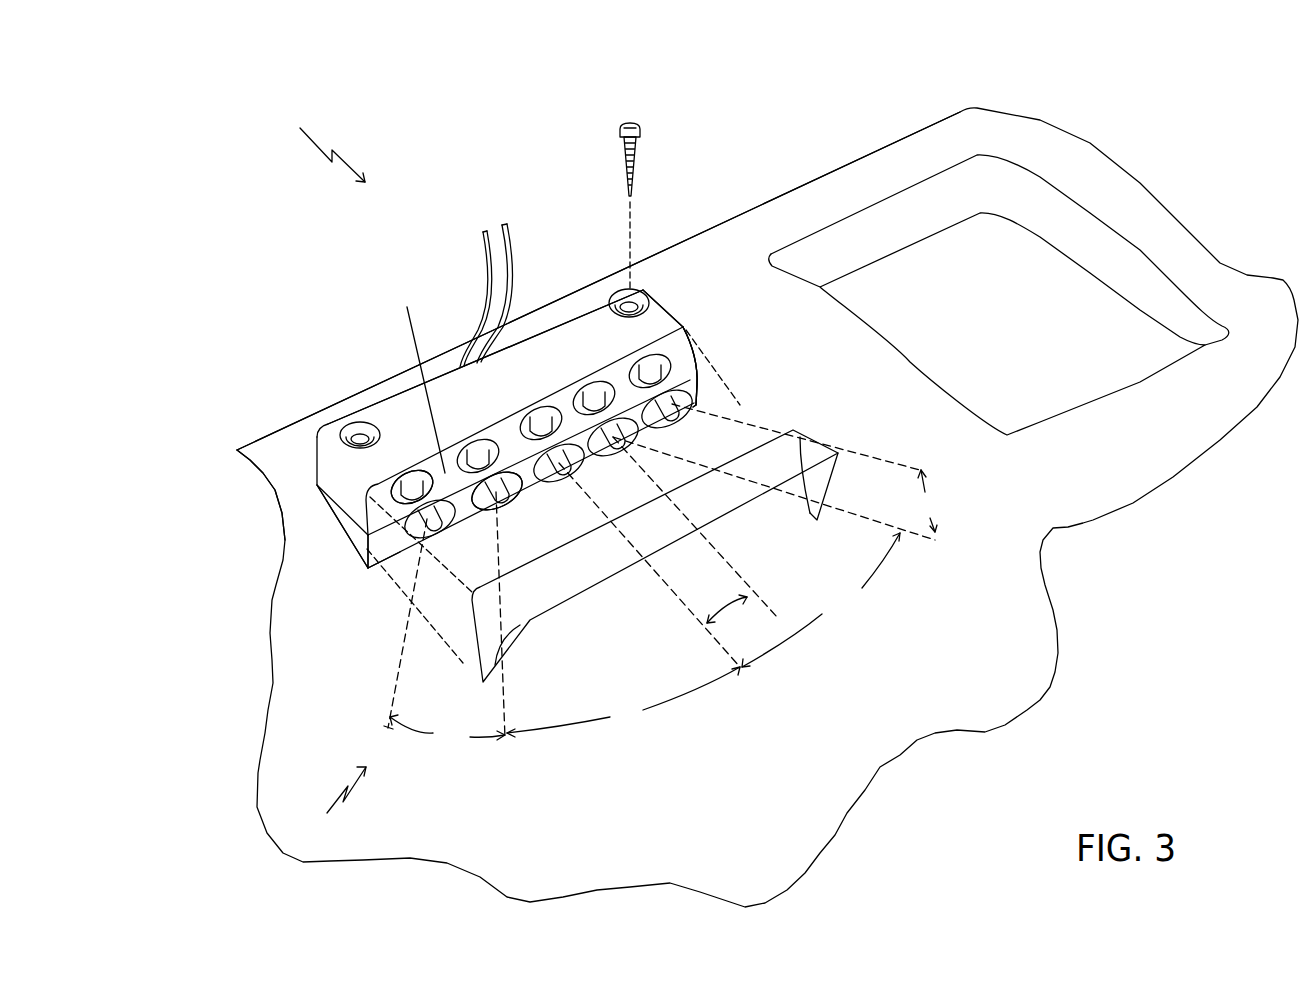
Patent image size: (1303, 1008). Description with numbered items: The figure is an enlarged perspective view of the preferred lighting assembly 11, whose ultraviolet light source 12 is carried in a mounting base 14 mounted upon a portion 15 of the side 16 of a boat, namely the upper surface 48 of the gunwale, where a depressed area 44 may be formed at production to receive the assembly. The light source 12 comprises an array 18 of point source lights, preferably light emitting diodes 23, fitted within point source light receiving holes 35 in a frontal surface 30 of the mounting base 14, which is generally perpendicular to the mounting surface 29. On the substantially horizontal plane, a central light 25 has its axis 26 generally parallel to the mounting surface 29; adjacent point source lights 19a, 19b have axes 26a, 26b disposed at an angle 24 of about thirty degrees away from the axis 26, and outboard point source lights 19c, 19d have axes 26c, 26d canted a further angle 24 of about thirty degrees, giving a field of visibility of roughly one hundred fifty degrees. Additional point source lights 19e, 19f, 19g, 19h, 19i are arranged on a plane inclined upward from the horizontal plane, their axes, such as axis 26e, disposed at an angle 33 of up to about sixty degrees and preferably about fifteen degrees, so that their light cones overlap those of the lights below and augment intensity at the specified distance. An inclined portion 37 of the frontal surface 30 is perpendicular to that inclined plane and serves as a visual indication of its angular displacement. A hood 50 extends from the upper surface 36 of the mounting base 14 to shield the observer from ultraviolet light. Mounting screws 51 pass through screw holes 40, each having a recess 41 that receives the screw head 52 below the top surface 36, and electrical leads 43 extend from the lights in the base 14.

The lighting assembly 11 is at (323, 140).
The ultraviolet light source 12 is at (686, 322).
The mounting base 14 is at (383, 413).
The portion of the side of a boat 15 is at (278, 478).
The side of a boat 16 is at (741, 233).
The array of point source lights 18 is at (338, 804).
The point source light 19a is at (618, 444).
The point source light 19b is at (508, 484).
The outboard point source light 19c is at (702, 393).
The outboard point source light 19d is at (448, 546).
The point source light 19e is at (544, 410).
The point source light 19f is at (477, 450).
The point source light 19g is at (594, 388).
The point source light 19h is at (428, 480).
The point source light 19i is at (652, 362).
The light emitting diode 23 is at (676, 401).
The angle 24 is at (663, 610).
The central light 25 is at (557, 458).
The axis 26 is at (723, 645).
The axis 26a is at (927, 541).
The axis 26b is at (503, 707).
The axis 26c is at (897, 464).
The axis 26d is at (387, 728).
The axis 26e is at (773, 620).
The mounting surface 29 is at (342, 547).
The frontal surface 30 is at (383, 573).
The angle 33 is at (737, 622).
The point source light receiving hole 35 is at (510, 484).
The upper surface 36 is at (475, 398).
The inclined portion 37 is at (412, 480).
The screw hole 40 is at (622, 300).
The recess 41 is at (355, 421).
The electrical leads 43 is at (502, 225).
The depressed area 44 is at (987, 333).
The upper surface of the gunwale 48 is at (298, 436).
The hood 50 is at (720, 496).
The mounting screw 51 is at (643, 132).
The screw head 52 is at (620, 134).